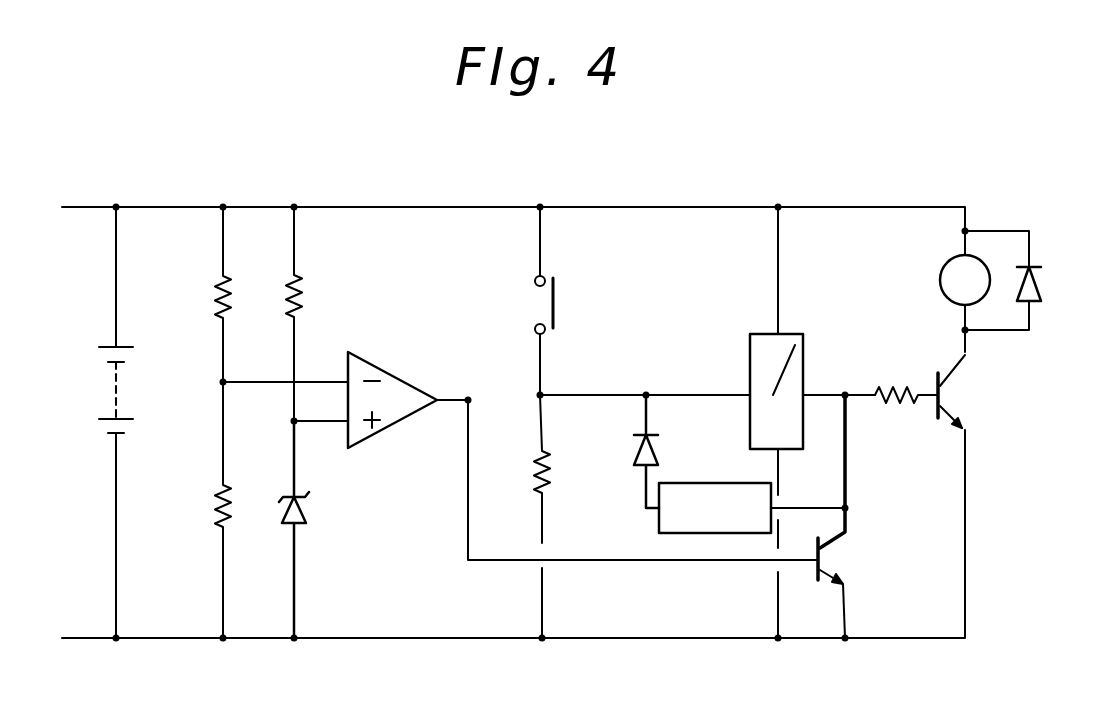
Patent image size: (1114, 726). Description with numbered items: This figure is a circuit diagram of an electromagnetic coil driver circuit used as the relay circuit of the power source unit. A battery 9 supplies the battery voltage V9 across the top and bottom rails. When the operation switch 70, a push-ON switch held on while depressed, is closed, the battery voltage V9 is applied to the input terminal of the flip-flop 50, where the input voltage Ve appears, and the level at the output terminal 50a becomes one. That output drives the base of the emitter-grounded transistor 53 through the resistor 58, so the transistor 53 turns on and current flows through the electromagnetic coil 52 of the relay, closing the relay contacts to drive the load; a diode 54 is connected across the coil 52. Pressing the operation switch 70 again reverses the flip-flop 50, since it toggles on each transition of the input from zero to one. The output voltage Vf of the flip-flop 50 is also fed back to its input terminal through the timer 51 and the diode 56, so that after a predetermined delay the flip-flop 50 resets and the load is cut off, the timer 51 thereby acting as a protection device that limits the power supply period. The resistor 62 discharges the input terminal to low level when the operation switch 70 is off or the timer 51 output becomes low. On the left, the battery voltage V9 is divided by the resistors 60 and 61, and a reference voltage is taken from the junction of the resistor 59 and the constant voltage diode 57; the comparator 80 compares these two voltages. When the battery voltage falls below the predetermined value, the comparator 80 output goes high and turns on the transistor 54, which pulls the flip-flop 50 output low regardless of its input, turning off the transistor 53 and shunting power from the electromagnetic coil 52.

The battery 9 is at (100, 397).
The battery voltage V9 is at (113, 300).
The resistor 60 is at (212, 300).
The resistor 61 is at (212, 513).
The resistor 59 is at (307, 302).
The constant voltage diode 57 is at (308, 505).
The comparator 80 is at (387, 373).
The operation switch 70 is at (556, 303).
The resistor 62 is at (548, 478).
The input terminal voltage Ve is at (592, 394).
The diode 56 is at (635, 452).
The timer circuit 51 is at (714, 483).
The flip-flop circuit 50 is at (792, 333).
The output terminal 50a is at (812, 395).
The resistor 58 is at (896, 400).
The output voltage Vf is at (857, 398).
The transistor 53 is at (950, 398).
The electromagnetic coil 52 is at (943, 268).
The transistor 54 is at (1043, 283).